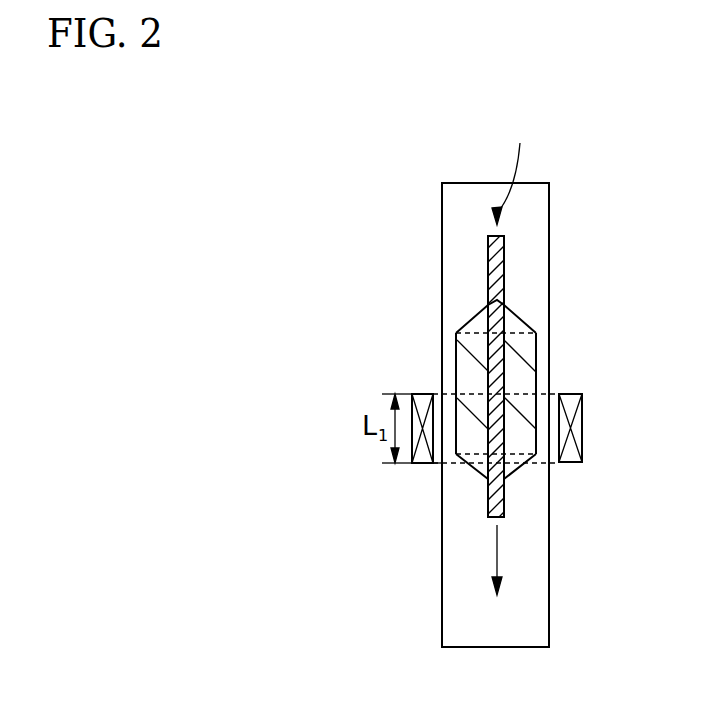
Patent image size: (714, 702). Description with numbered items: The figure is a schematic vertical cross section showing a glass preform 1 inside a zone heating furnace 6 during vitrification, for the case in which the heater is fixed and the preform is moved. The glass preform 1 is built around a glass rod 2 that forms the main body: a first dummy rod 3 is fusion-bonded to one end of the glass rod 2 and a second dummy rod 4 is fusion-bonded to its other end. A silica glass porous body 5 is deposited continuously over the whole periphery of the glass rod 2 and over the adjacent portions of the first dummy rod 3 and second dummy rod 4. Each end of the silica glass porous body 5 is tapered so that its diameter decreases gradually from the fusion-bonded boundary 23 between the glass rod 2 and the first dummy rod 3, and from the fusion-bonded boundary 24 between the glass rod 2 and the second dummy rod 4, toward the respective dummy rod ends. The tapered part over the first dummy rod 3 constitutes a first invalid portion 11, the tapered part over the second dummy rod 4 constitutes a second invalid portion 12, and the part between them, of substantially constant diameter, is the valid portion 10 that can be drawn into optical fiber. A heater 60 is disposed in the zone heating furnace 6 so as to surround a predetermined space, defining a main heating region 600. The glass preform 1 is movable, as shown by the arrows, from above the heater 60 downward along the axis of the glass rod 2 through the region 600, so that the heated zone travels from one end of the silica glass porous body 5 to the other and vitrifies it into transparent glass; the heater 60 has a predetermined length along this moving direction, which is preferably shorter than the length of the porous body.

The glass preform 1 is at (531, 139).
The glass rod 2 is at (502, 348).
The first dummy rod 3 is at (497, 253).
The second dummy rod 4 is at (500, 497).
The silica glass porous body 5 is at (463, 367).
The zone heating furnace 6 is at (442, 251).
The valid portion 10 is at (525, 375).
The first invalid portion 11 is at (515, 323).
The second invalid portion 12 is at (512, 470).
The fusion-bonded boundary 23 is at (492, 318).
The fusion-bonded boundary 24 is at (500, 446).
The heater 60 is at (421, 393).
The region 600 is at (441, 463).